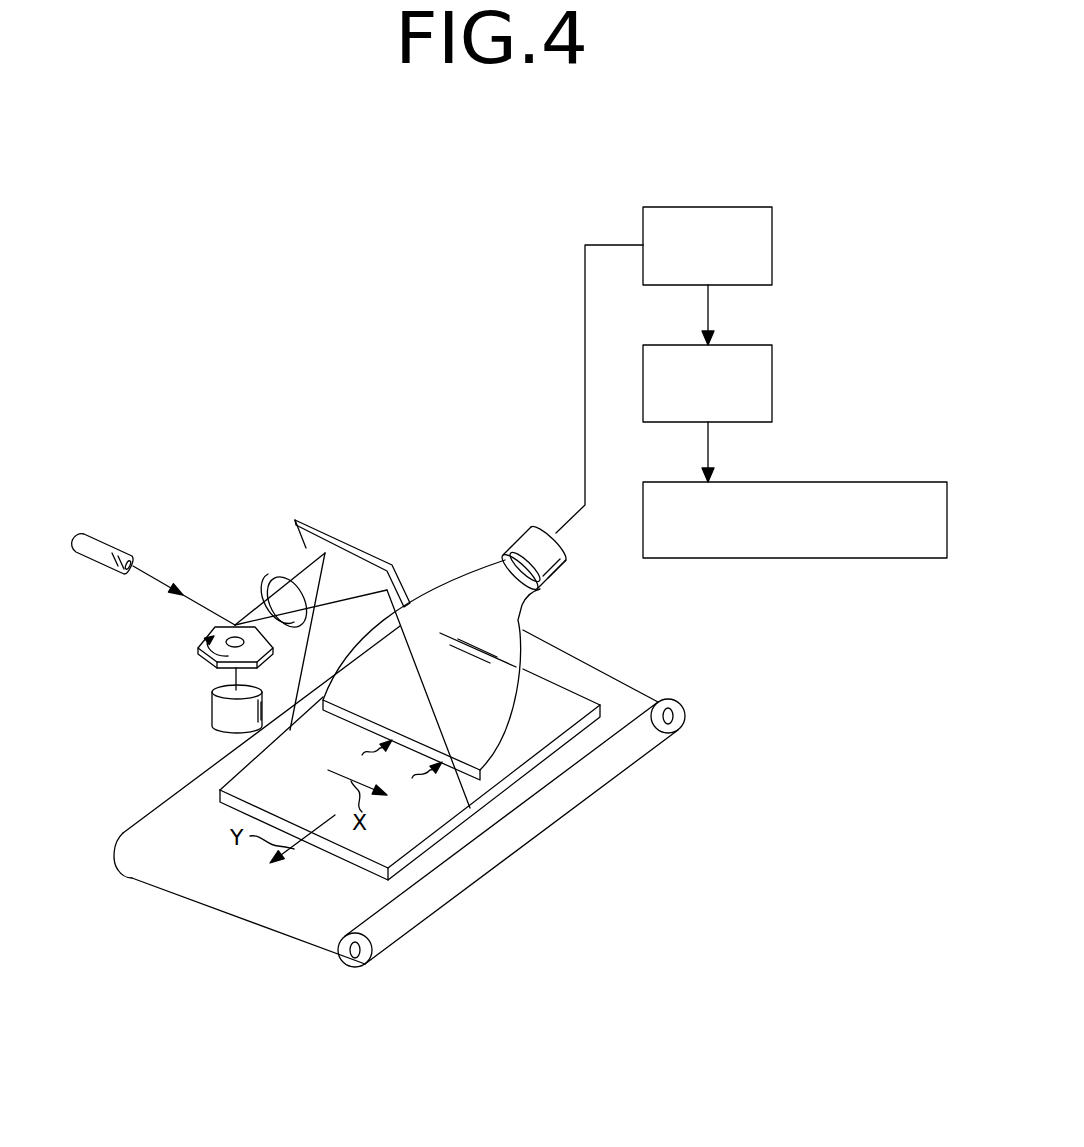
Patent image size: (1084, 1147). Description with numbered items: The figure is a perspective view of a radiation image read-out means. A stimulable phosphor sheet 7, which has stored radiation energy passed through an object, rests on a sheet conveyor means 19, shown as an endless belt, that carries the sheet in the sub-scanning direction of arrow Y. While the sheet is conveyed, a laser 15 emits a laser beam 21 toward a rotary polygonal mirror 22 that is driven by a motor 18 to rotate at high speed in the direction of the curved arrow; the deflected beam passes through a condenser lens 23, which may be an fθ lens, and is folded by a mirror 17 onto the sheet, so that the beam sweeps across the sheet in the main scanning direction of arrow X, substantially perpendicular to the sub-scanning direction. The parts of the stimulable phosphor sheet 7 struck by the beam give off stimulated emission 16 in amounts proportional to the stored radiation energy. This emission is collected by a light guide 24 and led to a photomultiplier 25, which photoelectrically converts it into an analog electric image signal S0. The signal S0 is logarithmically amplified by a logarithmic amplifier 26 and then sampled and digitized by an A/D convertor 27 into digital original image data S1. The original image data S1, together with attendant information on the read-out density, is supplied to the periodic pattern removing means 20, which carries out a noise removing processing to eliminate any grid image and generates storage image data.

The stimulable phosphor sheet 7 is at (418, 825).
The laser light source 15 is at (101, 548).
The stimulated emission 16 is at (339, 728).
The mirror 17 is at (335, 548).
The motor 18 is at (212, 718).
The sheet conveyor means 19 is at (370, 897).
The periodic pattern removing means 20 is at (912, 482).
The laser beam 21 is at (141, 590).
The rotary polygonal mirror 22 is at (199, 651).
The condenser lens 23 is at (274, 586).
The light guide 24 is at (457, 600).
The photomultiplier 25 is at (515, 530).
The logarithmic amplifier 26 is at (772, 240).
The A/D convertor 27 is at (772, 371).
The analog electric image signal S0 is at (610, 245).
The digital original image data S1 is at (708, 447).